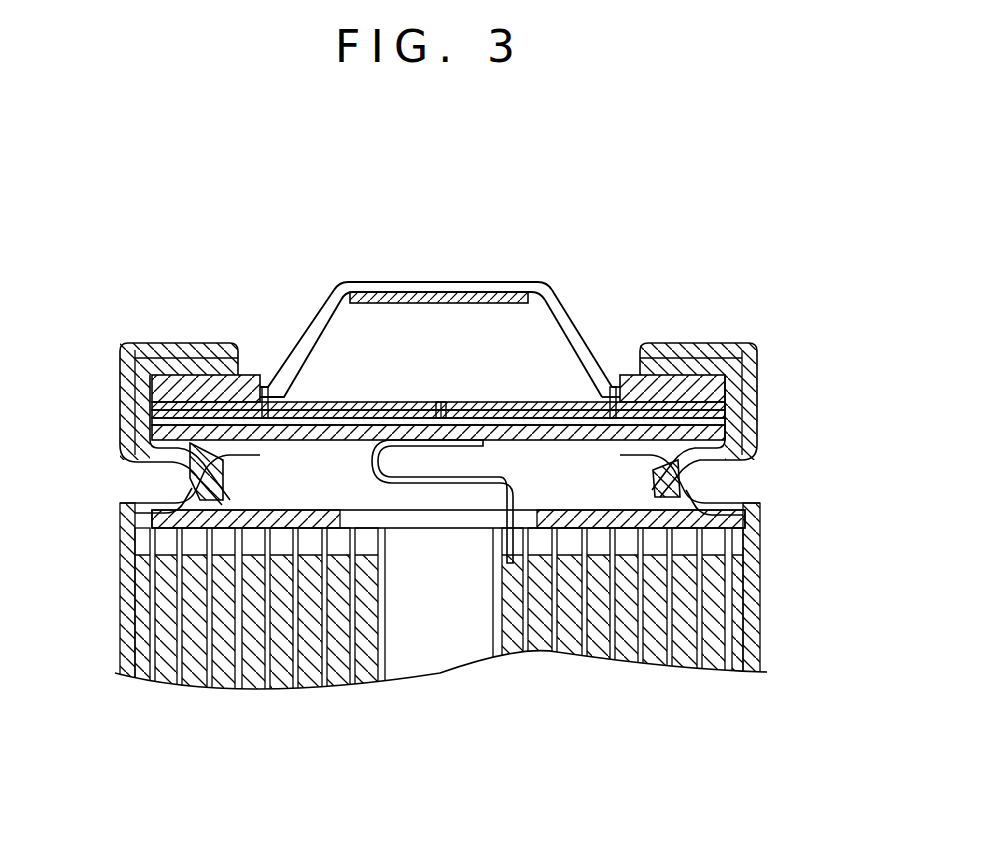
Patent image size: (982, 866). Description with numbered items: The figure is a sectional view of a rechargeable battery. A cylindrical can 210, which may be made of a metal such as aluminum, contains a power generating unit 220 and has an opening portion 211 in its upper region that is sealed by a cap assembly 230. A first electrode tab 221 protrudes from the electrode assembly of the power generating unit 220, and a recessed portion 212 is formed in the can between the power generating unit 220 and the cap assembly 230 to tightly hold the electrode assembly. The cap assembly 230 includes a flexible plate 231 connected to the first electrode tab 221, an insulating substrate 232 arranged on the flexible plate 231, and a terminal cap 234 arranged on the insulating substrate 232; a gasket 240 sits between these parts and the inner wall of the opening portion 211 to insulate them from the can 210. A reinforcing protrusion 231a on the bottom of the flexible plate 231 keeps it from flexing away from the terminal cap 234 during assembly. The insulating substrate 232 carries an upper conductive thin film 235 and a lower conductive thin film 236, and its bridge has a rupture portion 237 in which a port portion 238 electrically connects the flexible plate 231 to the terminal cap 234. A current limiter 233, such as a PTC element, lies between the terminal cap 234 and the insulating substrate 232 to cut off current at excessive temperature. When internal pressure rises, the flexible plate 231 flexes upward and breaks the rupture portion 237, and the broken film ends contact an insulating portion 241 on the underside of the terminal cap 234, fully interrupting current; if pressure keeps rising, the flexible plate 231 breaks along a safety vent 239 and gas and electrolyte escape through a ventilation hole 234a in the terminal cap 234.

The cylindrical can 210 is at (760, 555).
The opening portion 211 is at (150, 512).
The recessed portion 212 is at (690, 487).
The power generating unit 220 is at (238, 722).
The first electrode tab 221 is at (440, 480).
The cap assembly 230 is at (430, 340).
The flexible plate 231 is at (155, 432).
The reinforcing protrusion 231a is at (248, 474).
The insulating substrate 232 is at (152, 414).
The current limiter 233 is at (188, 388).
The terminal cap 234 is at (388, 285).
The ventilation hole 234a is at (567, 313).
The upper conductive thin film 235 is at (307, 404).
The lower conductive thin film 236 is at (733, 455).
The rupture portion 237 is at (262, 400).
The port portion 238 is at (445, 402).
The safety vent 239 is at (325, 441).
The gasket 240 is at (733, 393).
The insulating portion 241 is at (417, 293).